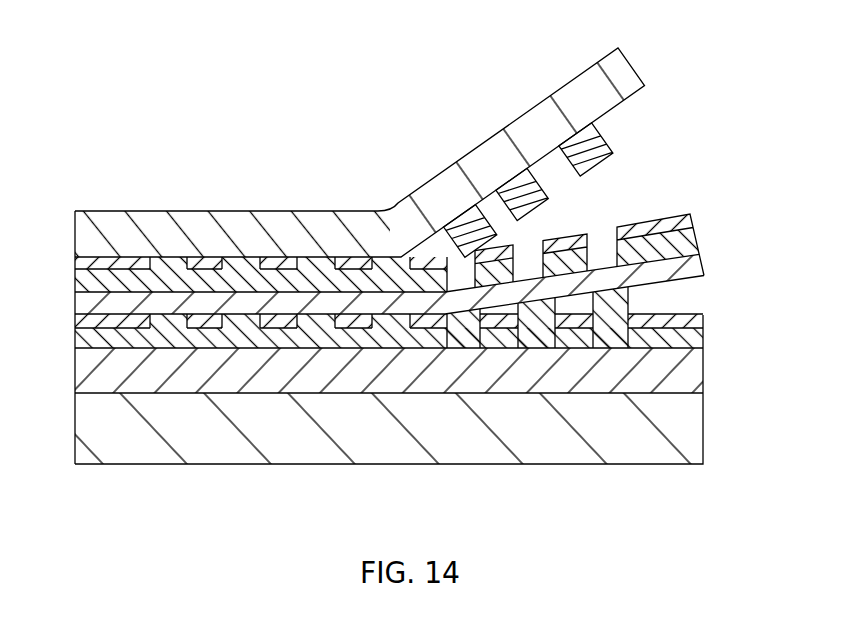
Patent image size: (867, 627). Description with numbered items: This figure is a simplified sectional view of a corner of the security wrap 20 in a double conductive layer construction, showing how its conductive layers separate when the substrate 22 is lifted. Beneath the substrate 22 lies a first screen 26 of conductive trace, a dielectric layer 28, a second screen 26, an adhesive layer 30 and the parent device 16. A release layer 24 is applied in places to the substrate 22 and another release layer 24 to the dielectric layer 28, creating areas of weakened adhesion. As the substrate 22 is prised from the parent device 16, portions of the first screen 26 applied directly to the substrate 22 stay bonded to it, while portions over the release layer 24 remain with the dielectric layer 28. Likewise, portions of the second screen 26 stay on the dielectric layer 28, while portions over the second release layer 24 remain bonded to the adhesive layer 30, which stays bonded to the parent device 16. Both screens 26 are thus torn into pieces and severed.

The security wrap 20 is at (200, 127).
The substrate 22 is at (626, 68).
The release layer 24 is at (652, 222).
The screen 26 is at (610, 150).
The dielectric layer 28 is at (707, 262).
The adhesive layer 30 is at (690, 373).
The parent device 16 is at (692, 445).